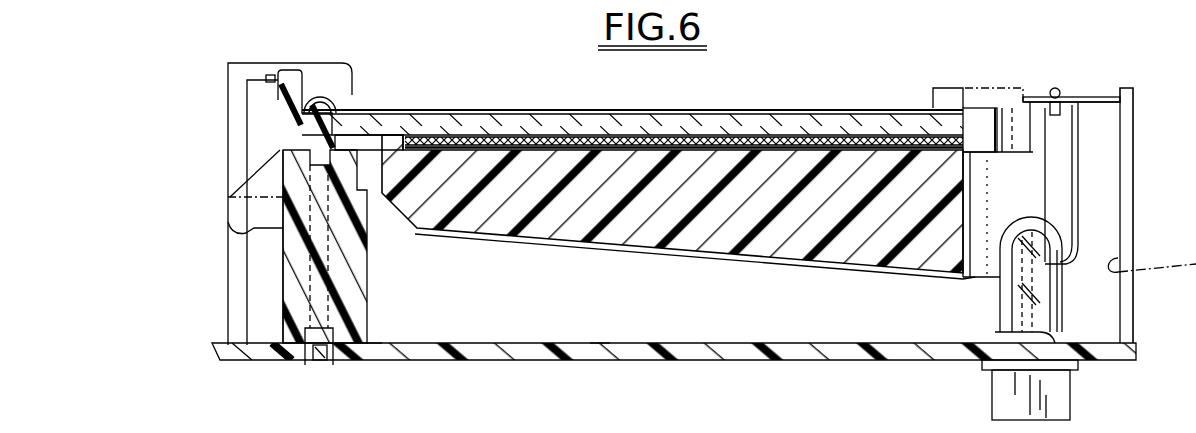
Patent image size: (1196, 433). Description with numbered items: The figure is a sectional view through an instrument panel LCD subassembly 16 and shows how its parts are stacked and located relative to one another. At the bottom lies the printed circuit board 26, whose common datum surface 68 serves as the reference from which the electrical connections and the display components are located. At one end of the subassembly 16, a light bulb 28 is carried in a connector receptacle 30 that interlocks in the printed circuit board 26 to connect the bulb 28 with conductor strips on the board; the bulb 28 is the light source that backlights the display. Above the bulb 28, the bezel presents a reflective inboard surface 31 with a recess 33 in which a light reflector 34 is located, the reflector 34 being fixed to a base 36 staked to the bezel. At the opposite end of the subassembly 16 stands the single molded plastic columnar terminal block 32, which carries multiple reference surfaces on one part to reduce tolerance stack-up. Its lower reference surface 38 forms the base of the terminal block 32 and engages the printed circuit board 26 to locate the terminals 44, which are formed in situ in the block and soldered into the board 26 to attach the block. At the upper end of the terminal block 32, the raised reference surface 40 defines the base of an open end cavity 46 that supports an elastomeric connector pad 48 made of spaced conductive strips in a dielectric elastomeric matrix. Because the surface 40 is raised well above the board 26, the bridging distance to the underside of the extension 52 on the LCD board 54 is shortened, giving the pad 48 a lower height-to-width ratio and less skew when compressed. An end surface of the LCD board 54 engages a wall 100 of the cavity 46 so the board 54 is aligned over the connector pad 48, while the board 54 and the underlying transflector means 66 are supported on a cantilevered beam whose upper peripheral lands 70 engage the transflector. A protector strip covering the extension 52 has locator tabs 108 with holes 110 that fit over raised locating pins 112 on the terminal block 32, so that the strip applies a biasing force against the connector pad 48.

The LCD subassembly 16 is at (688, 110).
The printed circuit board 26 is at (487, 363).
The light bulb 28 is at (1003, 297).
The connector receptacle 30 is at (1064, 336).
The reflective inboard surface 31 is at (990, 118).
The terminal block 32 is at (366, 277).
The recess 33 is at (1058, 128).
The light reflector 34 is at (1082, 173).
The base 36 is at (1035, 97).
The reference surface 38 is at (374, 343).
The reference surface 40 is at (440, 113).
The terminal 44 is at (306, 350).
The open end cavity 46 is at (335, 110).
The elastomeric connector pad 48 is at (384, 113).
The extension 52 is at (337, 94).
The LCD board 54 is at (772, 115).
The transflector means 66 is at (834, 138).
The common datum surface 68 is at (598, 344).
The upper peripheral land 70 is at (462, 113).
The wall 100 is at (300, 128).
The locator tab 108 is at (270, 74).
The hole 110 is at (288, 87).
The locating pin 112 is at (286, 72).